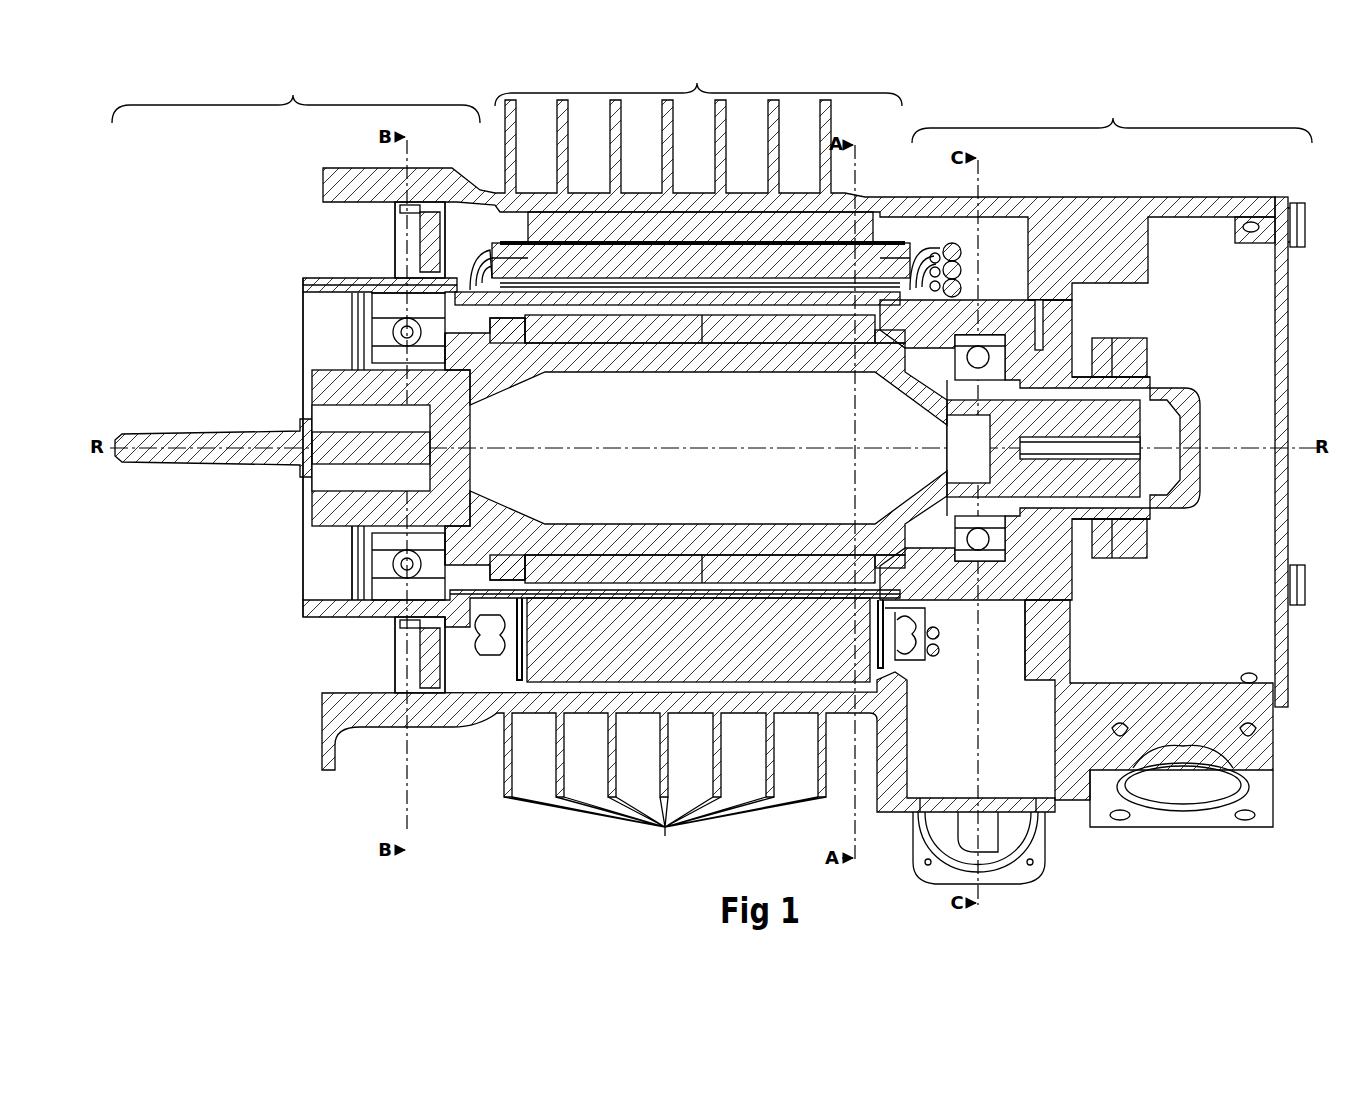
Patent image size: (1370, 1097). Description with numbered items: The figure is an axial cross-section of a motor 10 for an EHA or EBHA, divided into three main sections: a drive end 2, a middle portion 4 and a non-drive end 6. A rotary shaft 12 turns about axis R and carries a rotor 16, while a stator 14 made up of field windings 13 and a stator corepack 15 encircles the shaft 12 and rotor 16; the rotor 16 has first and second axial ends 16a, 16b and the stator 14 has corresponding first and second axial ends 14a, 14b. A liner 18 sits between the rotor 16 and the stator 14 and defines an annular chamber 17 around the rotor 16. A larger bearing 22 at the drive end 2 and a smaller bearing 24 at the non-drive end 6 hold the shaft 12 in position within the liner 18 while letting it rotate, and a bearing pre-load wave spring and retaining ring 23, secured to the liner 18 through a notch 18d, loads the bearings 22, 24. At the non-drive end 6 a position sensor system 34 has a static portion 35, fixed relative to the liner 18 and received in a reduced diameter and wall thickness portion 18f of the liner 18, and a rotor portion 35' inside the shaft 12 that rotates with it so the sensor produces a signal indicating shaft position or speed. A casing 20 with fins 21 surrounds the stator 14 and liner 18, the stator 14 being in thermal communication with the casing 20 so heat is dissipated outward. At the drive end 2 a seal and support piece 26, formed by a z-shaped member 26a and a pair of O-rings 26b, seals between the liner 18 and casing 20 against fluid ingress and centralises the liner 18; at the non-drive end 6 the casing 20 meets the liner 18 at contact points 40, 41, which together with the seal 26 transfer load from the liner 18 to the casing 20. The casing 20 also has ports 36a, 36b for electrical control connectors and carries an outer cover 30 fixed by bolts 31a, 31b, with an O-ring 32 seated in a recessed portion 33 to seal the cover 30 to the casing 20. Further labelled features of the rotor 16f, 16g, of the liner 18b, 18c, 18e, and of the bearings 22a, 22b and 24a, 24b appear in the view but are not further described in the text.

The motor 10 is at (205, 302).
The drive end 2 is at (296, 94).
The middle portion 4 is at (698, 81).
The non-drive end 6 is at (1112, 117).
The rotary shaft 12 is at (226, 446).
The field windings 13 is at (940, 272).
The stator 14 is at (918, 238).
The first axial end of stator 14a is at (483, 246).
The second axial end of stator 14b is at (966, 246).
The stator corepack 15 is at (512, 258).
The rotor 16 is at (768, 332).
The first axial end of rotor 16a is at (528, 350).
The second axial end of rotor 16b is at (876, 350).
The rotor hub flange 16f is at (450, 358).
The rotor hub seat 16g is at (955, 372).
The chamber 17 is at (786, 305).
The liner 18 is at (300, 288).
The bearing shield plate 18b is at (386, 290).
The bearing shield second part 18c is at (995, 323).
The notch 18d is at (356, 292).
The bearing shield wall 18e is at (1007, 340).
The reduced diameter and wall thickness portion 18f is at (1150, 385).
The casing 20 is at (382, 182).
The fins 21 is at (665, 840).
The bearing 22 is at (395, 334).
The outer seal ring 22a is at (372, 307).
The inner seal ring 22b is at (372, 352).
The bearing pre-load wave spring and retaining ring 23 is at (358, 553).
The bearing 24 is at (982, 547).
The bearing outer race 24a is at (960, 340).
The bearing inner race 24b is at (966, 370).
The seal and support piece 26 is at (378, 662).
The z-shaped member 26a is at (416, 661).
The O-rings 26b is at (412, 624).
The outer cover 30 is at (1282, 376).
The bolt 31a is at (1300, 236).
The bolt 31b is at (1300, 584).
The O-ring 32 is at (1249, 222).
The recessed portion 33 is at (1256, 226).
The position sensor system 34 is at (1152, 400).
The static portion 35 is at (1137, 438).
The rotor portion 35' is at (1120, 498).
The port 36a is at (990, 835).
The port 36b is at (1183, 790).
The contact point 40 is at (1040, 318).
The contact point 41 is at (1038, 602).